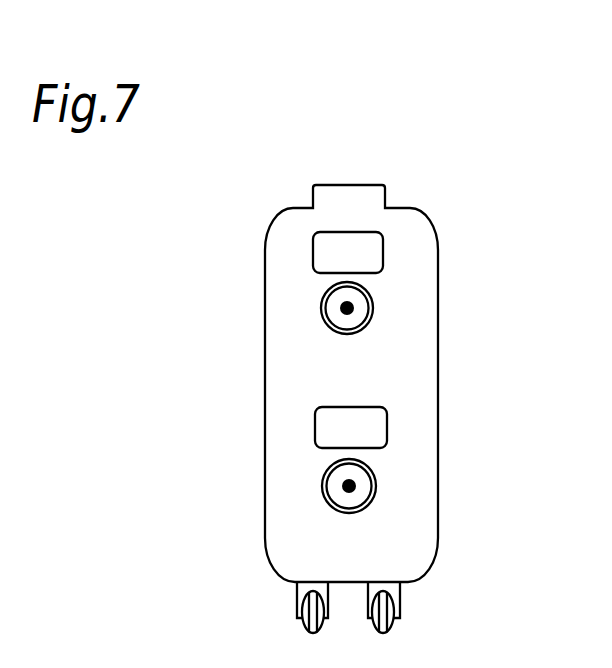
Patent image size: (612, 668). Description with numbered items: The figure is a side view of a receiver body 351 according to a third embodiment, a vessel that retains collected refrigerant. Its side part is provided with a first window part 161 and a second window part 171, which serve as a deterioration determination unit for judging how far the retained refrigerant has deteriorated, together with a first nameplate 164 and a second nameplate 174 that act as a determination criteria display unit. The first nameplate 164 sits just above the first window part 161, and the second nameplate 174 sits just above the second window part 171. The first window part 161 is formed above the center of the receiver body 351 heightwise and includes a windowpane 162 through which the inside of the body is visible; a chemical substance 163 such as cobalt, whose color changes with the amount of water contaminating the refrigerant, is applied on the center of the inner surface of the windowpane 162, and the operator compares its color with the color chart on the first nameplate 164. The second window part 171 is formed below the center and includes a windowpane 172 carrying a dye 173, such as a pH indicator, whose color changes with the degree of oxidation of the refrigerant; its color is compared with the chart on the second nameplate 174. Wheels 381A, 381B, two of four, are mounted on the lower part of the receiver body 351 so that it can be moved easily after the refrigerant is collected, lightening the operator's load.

The receiver body 351 is at (433, 224).
The first window part 161 is at (373, 287).
The windowpane 162 is at (362, 307).
The chemical substance 163 is at (344, 306).
The first nameplate 164 is at (313, 246).
The second window part 171 is at (372, 462).
The windowpane 172 is at (364, 487).
The dye 173 is at (345, 484).
The second nameplate 174 is at (315, 421).
The wheel 381A is at (308, 610).
The wheel 381B is at (388, 610).